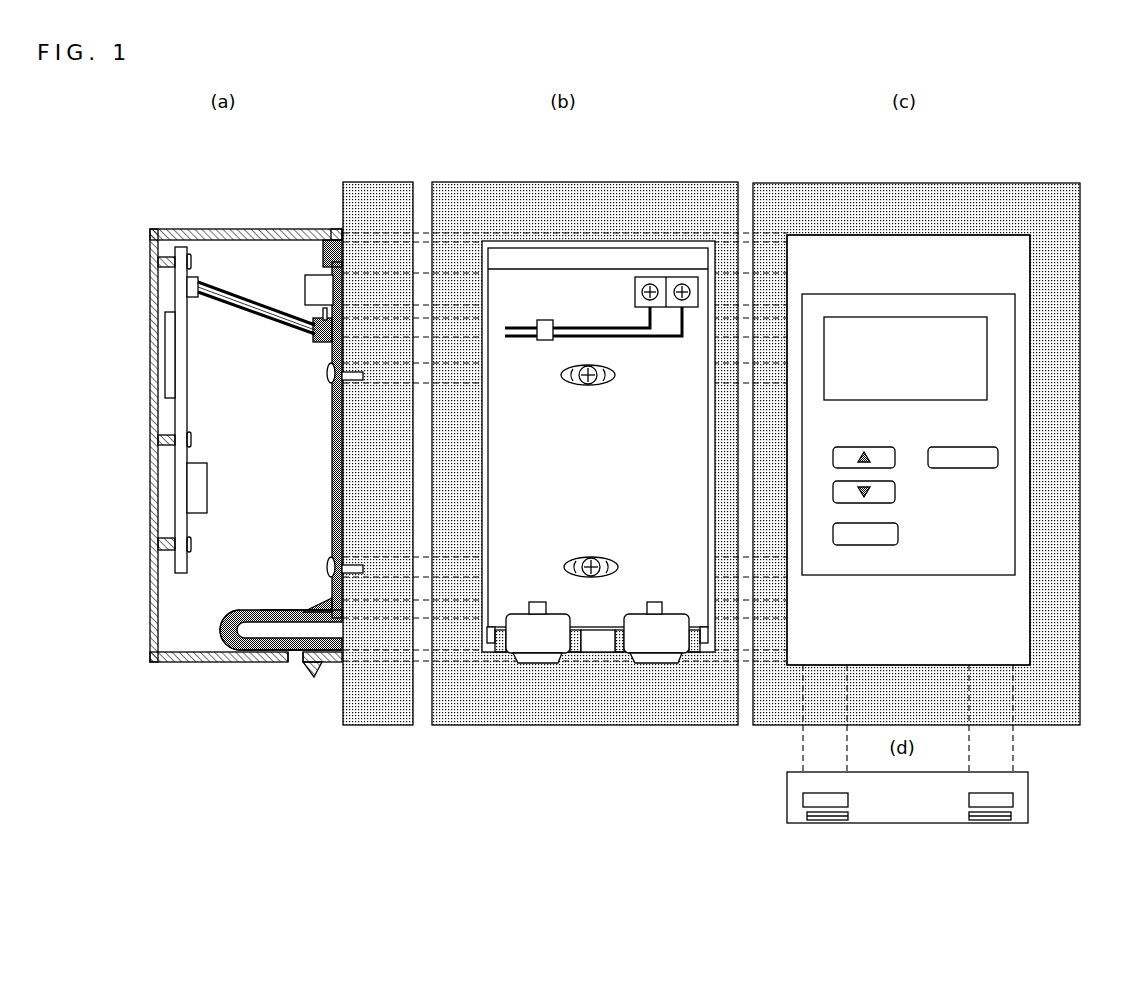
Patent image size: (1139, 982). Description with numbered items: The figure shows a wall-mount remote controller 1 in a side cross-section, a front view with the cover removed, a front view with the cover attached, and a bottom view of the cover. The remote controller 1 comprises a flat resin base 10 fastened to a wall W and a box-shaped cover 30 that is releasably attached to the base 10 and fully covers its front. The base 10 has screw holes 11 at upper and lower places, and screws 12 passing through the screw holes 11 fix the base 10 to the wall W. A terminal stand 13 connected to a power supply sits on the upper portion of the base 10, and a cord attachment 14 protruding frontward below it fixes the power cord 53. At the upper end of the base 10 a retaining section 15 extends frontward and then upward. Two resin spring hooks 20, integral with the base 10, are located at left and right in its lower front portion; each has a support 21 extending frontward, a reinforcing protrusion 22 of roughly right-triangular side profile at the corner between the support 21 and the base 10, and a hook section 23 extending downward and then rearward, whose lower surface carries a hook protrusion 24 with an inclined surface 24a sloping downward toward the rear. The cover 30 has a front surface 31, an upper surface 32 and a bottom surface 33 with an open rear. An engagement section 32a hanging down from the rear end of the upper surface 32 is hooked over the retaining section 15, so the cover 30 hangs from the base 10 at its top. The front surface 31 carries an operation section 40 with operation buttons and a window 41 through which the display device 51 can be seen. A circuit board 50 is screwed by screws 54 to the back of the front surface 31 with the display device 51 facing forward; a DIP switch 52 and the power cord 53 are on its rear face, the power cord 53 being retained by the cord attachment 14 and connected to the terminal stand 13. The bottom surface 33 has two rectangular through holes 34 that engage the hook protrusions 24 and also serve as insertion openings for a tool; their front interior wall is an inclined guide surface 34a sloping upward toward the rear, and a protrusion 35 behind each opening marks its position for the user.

The remote controller 1 is at (157, 192).
The base 10 is at (332, 440).
The screw holes 11 is at (565, 381).
The screws 12 is at (327, 375).
The terminal stand 13 is at (305, 289).
The cord attachment 14 is at (315, 341).
The retaining section 15 is at (322, 245).
The spring hooks 20 is at (258, 600).
The support 21 is at (278, 609).
The reinforcing protrusion 22 is at (313, 604).
The hook section 23 is at (252, 614).
The hook protrusion 24 is at (296, 663).
The inclined surface 24a is at (302, 665).
The cover 30 is at (150, 237).
The front surface 31 is at (150, 567).
The upper surface 32 is at (218, 229).
The engagement section 32a is at (338, 228).
The bottom surface 33 is at (178, 665).
The through holes 34 is at (292, 664).
The inclined guide surface 34a is at (284, 664).
The protrusion 35 is at (320, 676).
The operation section 40 is at (1002, 430).
The window 41 is at (150, 300).
The circuit board 50 is at (187, 385).
The display device 51 is at (168, 353).
The DIP switch 52 is at (207, 480).
The power cord 53 is at (226, 300).
The screws 54 is at (192, 260).
The wall w is at (385, 184).